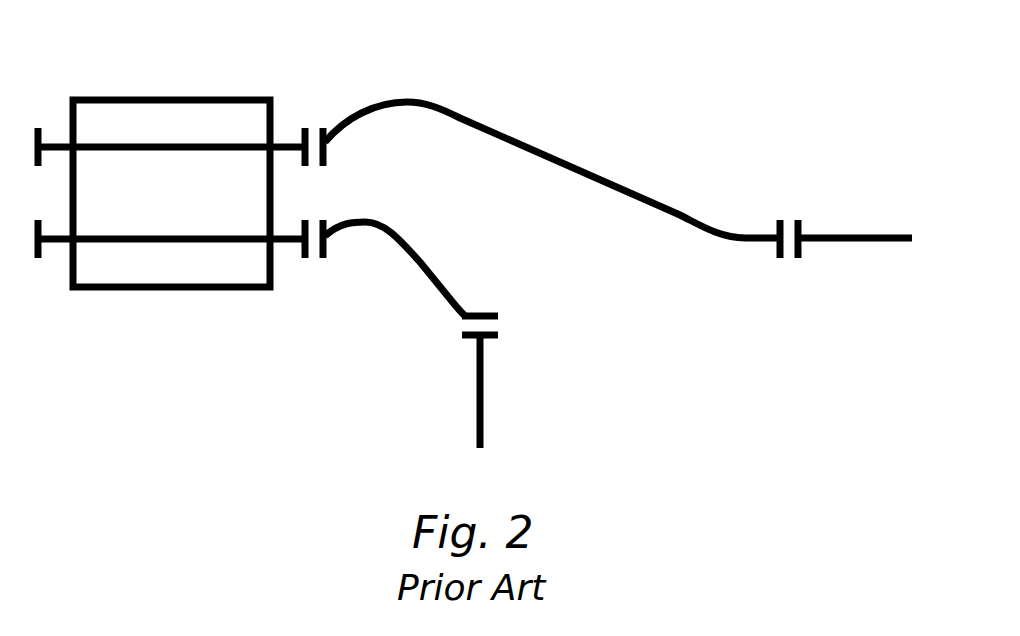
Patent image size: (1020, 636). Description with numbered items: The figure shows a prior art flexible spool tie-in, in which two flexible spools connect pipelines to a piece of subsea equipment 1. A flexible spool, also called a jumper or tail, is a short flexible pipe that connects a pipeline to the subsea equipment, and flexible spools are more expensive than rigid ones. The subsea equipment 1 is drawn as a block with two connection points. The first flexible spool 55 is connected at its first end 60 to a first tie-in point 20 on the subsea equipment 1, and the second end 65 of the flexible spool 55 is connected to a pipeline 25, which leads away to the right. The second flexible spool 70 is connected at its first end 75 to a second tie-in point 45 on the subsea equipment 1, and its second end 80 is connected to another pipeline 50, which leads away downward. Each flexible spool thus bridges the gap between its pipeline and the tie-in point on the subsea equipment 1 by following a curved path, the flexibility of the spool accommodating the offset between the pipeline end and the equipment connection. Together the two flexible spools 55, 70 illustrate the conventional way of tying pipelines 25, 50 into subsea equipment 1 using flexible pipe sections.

The subsea equipment 1 is at (179, 272).
The first tie-in point 20 is at (303, 128).
The first end 60 is at (328, 129).
The second tie-in point 45 is at (301, 221).
The first end 75 is at (326, 249).
The flexible spool 55 is at (561, 163).
The flexible spool 70 is at (419, 262).
The second end 80 is at (491, 312).
The pipeline 50 is at (483, 401).
The second end 65 is at (780, 225).
The pipeline 25 is at (862, 241).